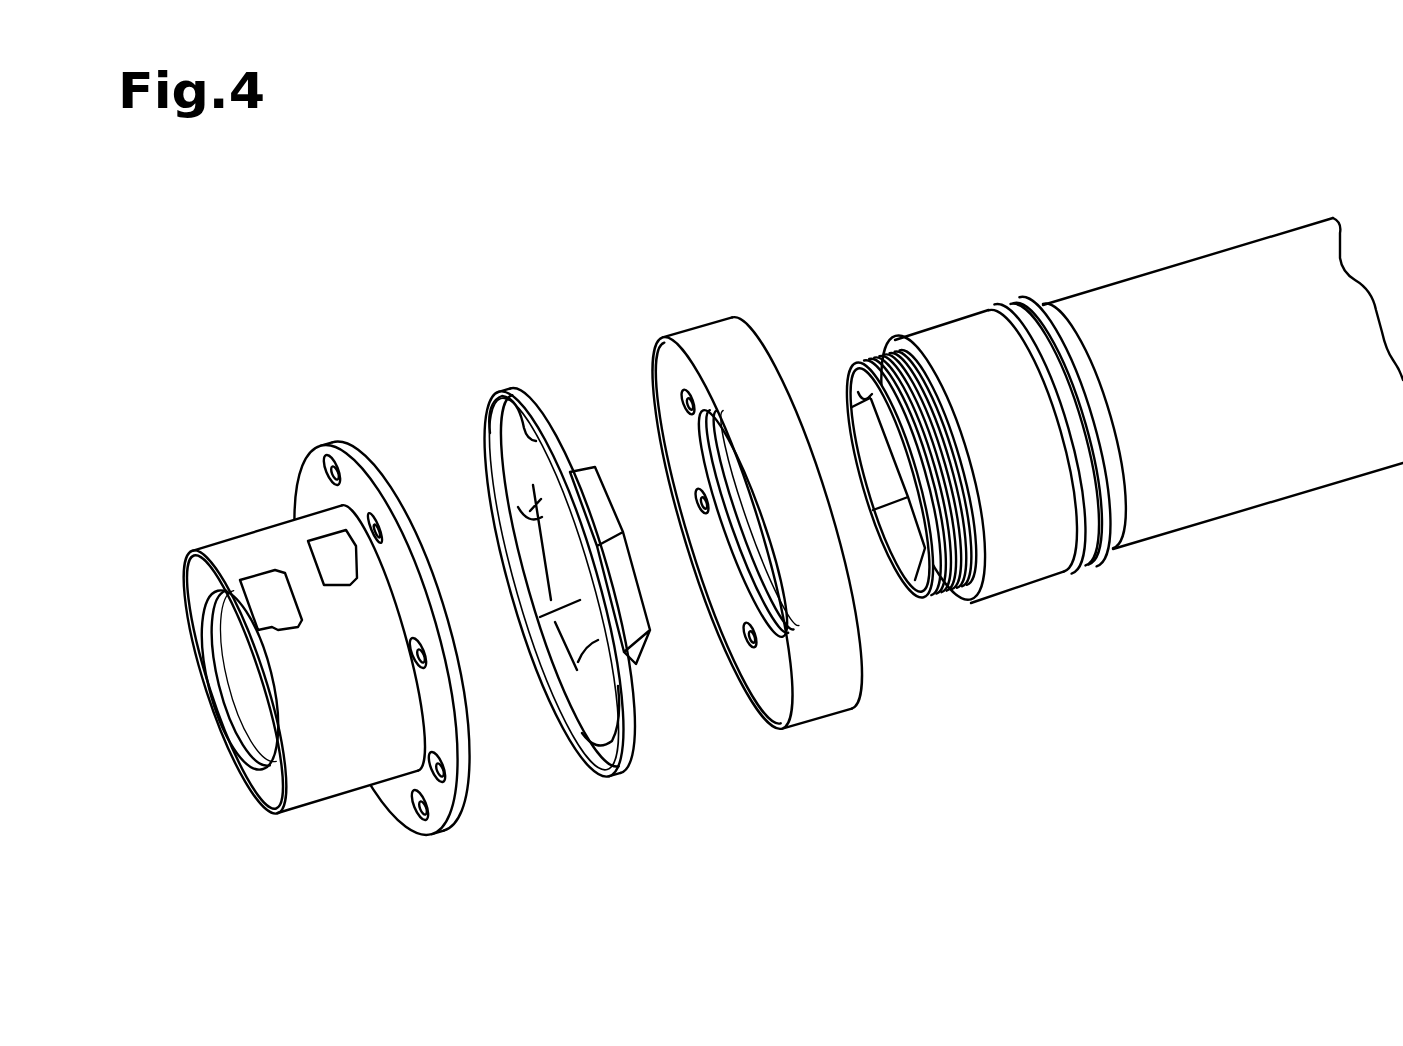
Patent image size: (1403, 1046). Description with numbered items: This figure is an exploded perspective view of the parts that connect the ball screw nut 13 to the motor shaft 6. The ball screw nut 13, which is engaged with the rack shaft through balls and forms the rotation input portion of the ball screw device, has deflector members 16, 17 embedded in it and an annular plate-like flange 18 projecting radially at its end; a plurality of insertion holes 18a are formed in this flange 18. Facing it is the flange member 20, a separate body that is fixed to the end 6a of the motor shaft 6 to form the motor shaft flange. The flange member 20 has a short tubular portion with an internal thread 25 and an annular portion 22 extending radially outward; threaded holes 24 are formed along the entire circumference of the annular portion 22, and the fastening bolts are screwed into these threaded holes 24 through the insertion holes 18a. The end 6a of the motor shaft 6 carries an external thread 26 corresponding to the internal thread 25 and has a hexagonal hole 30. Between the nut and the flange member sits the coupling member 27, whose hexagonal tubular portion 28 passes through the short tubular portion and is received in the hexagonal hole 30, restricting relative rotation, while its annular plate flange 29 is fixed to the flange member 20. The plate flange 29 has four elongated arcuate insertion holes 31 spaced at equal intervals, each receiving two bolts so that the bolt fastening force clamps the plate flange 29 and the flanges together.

The motor shaft 6 is at (1100, 432).
The end of the motor shaft 6a is at (930, 481).
The ball screw nut 13 is at (347, 623).
The deflector member 16 is at (261, 584).
The deflector member 17 is at (321, 548).
The flange 18 is at (395, 623).
The insertion holes 18a is at (336, 470).
The flange member 20 is at (748, 508).
The annular portion 22 is at (687, 371).
The threaded holes 24 is at (682, 398).
The internal thread 25 is at (744, 582).
The external thread 26 is at (967, 598).
The coupling member 27 is at (550, 563).
The tubular portion 28 is at (586, 464).
The plate flange 29 is at (530, 410).
The hexagonal hole 30 is at (853, 400).
The insertion holes 31 is at (489, 437).